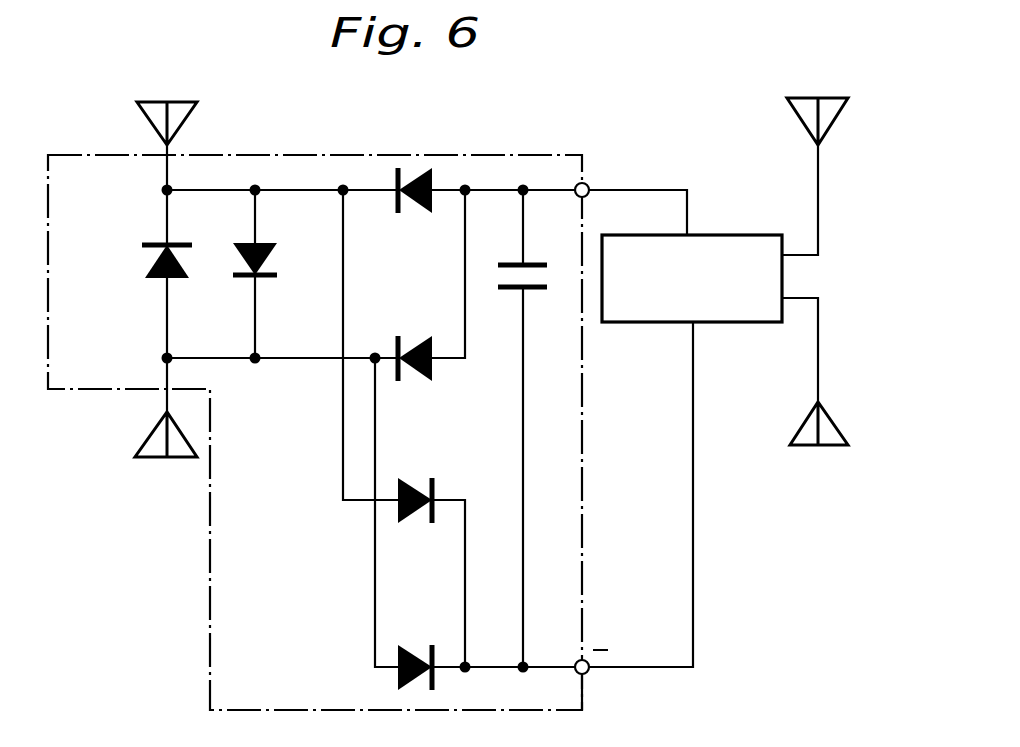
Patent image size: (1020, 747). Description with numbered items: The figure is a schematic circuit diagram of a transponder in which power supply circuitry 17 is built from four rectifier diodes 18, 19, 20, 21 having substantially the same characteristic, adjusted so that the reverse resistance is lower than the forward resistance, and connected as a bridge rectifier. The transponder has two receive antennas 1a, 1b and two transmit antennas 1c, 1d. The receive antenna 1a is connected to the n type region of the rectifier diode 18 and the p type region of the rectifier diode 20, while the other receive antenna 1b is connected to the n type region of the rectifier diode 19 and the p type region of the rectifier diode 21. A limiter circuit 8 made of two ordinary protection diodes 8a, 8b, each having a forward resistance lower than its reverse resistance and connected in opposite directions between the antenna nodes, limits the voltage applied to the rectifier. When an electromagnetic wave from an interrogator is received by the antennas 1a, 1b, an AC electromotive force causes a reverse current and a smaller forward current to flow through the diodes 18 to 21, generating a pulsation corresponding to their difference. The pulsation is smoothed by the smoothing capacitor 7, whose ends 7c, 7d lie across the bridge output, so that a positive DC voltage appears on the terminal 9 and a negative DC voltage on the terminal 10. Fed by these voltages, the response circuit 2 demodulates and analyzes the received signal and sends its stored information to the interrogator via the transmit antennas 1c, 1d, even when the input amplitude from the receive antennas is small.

The receive antenna 1a is at (148, 122).
The receive antenna 1b is at (172, 458).
The transmit antenna 1c is at (800, 118).
The transmit antenna 1d is at (806, 432).
The response circuit 2 is at (724, 236).
The smoothing capacitor 7 is at (557, 389).
The capacitor end 7c is at (528, 184).
The capacitor end 7d is at (530, 664).
The limiter circuit 8 is at (178, 265).
The protection diode 8a is at (242, 280).
The protection diode 8b is at (145, 270).
The terminal 9 is at (590, 184).
The terminal 10 is at (590, 672).
The power supply circuitry 17 is at (210, 640).
The rectifier diode 18 is at (422, 208).
The rectifier diode 19 is at (435, 368).
The rectifier diode 20 is at (408, 480).
The rectifier diode 21 is at (412, 648).